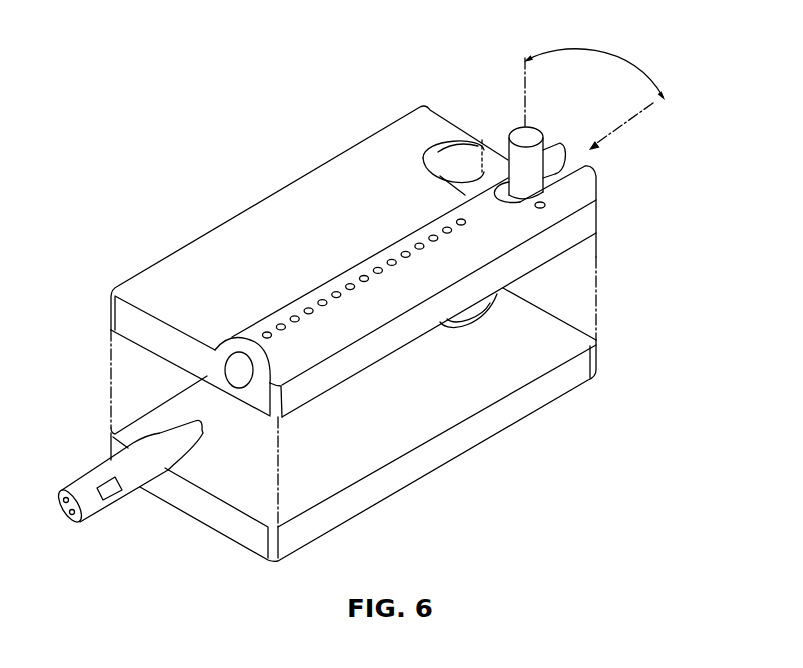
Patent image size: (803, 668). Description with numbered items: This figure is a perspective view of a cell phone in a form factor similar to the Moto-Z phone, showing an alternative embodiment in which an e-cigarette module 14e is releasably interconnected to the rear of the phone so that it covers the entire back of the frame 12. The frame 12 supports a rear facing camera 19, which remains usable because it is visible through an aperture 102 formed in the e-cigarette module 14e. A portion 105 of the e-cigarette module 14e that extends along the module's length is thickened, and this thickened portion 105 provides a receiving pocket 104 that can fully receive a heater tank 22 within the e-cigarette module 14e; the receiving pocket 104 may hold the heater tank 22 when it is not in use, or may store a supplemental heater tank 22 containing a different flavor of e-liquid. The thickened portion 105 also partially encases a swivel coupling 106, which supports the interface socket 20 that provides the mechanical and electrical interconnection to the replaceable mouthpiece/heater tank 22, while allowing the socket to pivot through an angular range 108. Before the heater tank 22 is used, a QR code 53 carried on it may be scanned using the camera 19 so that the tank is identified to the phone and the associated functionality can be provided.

The frame 12 is at (574, 387).
The e-cigarette module 14e is at (288, 184).
The camera 19 is at (483, 318).
The interface socket 20 is at (523, 127).
The heater tank 22 is at (93, 477).
The QR code 53 is at (111, 494).
The aperture 102 is at (423, 158).
The receiving pocket 104 is at (243, 382).
The thickened portion 105 is at (287, 302).
The swivel coupling 106 is at (599, 156).
The angular range 108 is at (607, 52).